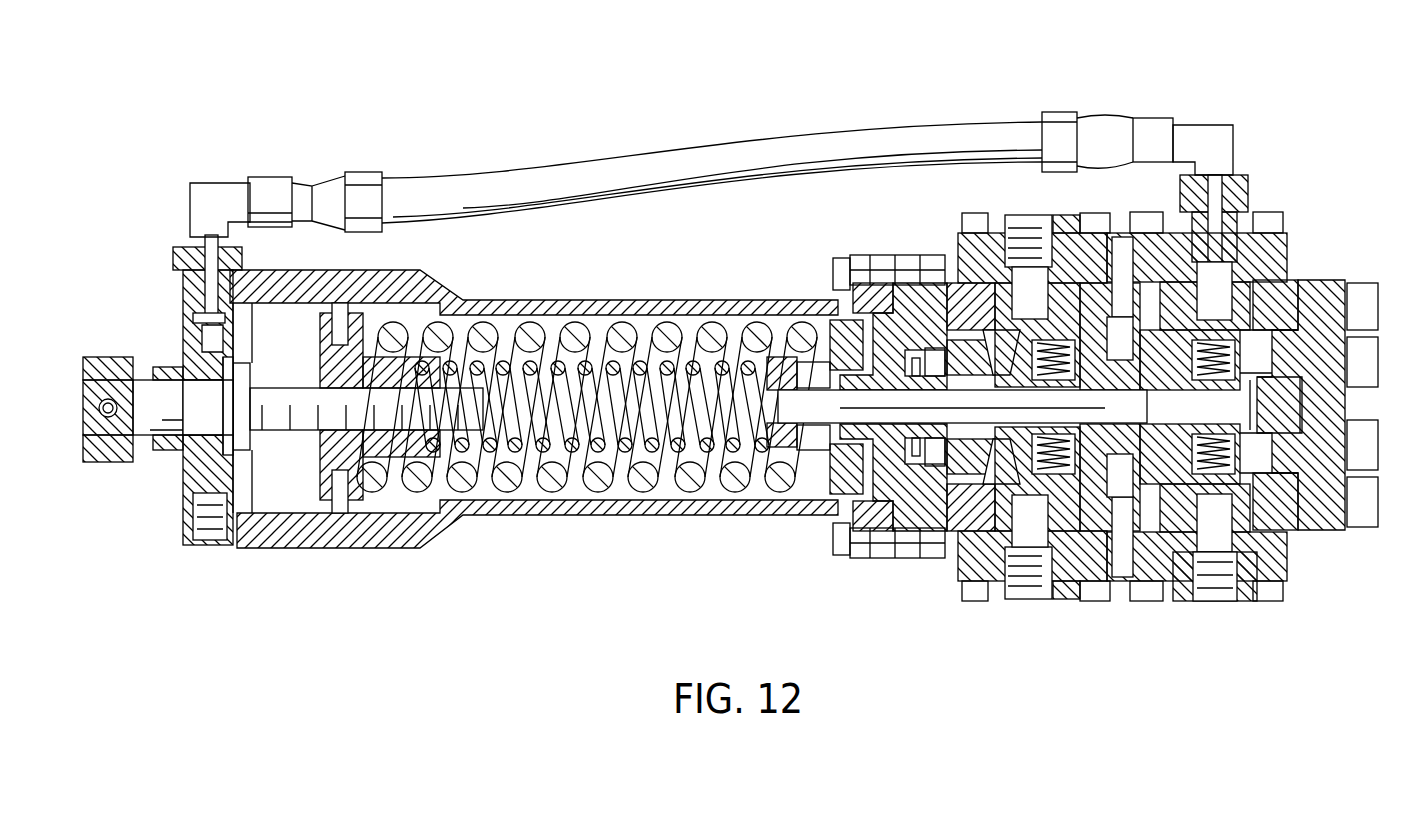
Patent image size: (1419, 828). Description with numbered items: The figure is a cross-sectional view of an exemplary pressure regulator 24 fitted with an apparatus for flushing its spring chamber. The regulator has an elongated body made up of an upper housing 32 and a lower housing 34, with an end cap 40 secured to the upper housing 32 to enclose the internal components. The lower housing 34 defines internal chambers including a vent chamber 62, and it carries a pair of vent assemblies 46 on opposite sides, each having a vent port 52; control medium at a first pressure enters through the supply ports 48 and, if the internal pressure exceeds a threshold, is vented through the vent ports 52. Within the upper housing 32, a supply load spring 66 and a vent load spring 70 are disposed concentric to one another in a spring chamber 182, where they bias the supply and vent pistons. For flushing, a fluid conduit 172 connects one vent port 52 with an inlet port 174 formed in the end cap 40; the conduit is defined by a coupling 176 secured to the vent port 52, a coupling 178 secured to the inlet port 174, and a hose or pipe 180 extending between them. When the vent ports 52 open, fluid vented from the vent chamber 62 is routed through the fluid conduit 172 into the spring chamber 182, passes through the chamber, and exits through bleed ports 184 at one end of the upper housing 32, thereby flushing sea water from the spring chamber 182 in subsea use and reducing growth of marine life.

The pressure regulator 24 is at (270, 80).
The upper housing 32 is at (428, 288).
The lower housing 34 is at (1285, 305).
The end cap 40 is at (186, 463).
The vent assembly 46 is at (1298, 247).
The supply port 48 is at (1037, 228).
The vent port 52 is at (1225, 275).
The vent chamber 62 is at (1258, 357).
The supply load spring 66 is at (548, 485).
The vent load spring 70 is at (625, 455).
The fluid conduit 172 is at (208, 258).
The inlet port 174 is at (207, 318).
The coupling 176 is at (1218, 128).
The coupling 178 is at (205, 185).
The hose or pipe 180 is at (636, 168).
The spring chamber 182 is at (550, 320).
The bleed port 184 is at (828, 305).